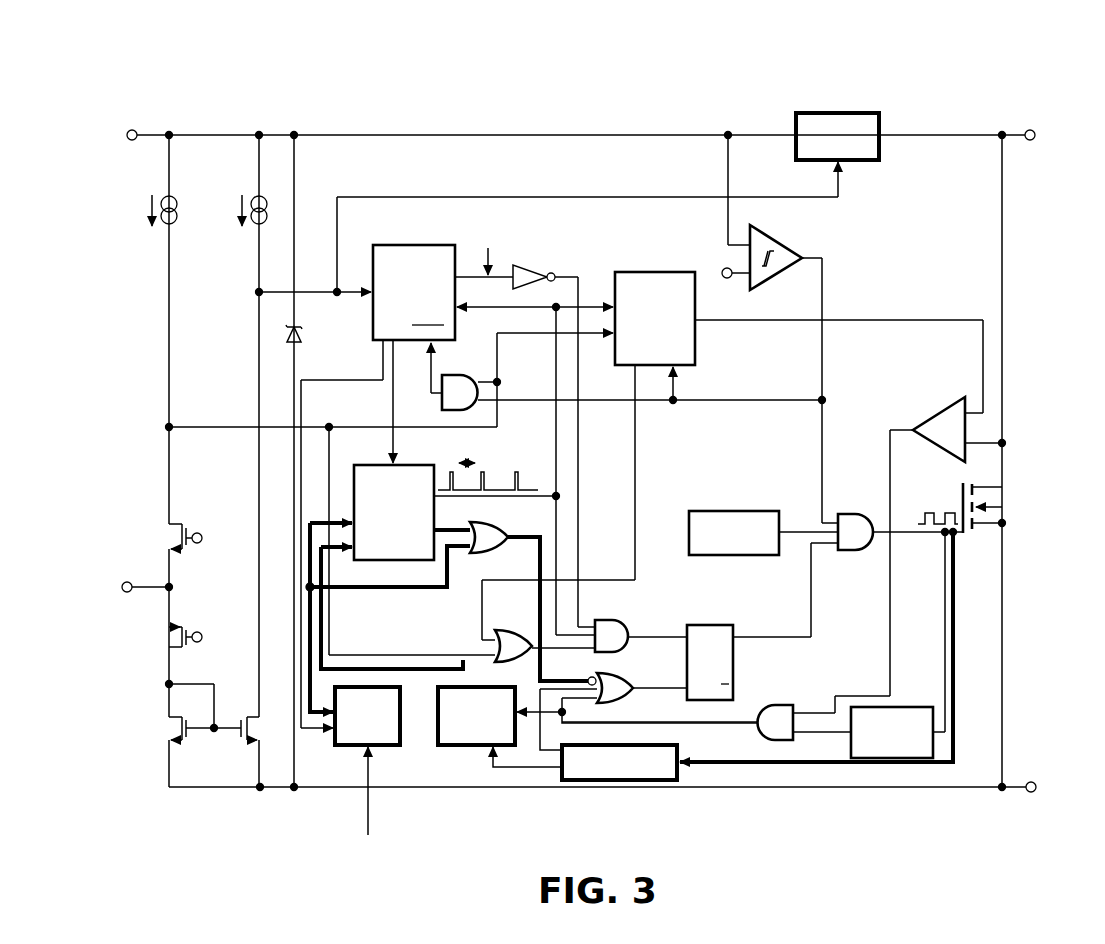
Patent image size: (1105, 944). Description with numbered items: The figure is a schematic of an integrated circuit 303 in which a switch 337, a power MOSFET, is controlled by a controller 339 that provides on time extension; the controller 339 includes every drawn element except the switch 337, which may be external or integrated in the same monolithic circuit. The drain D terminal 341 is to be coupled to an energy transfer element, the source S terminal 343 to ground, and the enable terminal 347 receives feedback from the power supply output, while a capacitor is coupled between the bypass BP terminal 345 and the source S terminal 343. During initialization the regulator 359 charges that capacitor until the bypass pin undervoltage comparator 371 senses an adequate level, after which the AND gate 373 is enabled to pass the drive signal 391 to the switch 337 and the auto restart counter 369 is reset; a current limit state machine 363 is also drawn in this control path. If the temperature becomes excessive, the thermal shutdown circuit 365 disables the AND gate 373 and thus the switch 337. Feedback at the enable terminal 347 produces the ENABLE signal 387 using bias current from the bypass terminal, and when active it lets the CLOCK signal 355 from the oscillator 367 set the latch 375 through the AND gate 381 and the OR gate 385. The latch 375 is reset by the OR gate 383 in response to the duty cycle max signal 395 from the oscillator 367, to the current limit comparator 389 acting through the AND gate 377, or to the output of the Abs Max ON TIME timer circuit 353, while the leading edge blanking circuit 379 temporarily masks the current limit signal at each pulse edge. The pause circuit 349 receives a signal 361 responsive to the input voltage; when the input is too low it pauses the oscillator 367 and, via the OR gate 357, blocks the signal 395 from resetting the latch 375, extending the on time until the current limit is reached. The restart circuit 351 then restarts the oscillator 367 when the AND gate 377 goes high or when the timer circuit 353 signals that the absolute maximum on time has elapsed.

The integrated circuit 303 is at (1002, 53).
The controller 339 is at (440, 98).
The bypass BP terminal 345 is at (108, 115).
The drain D terminal 341 is at (1044, 136).
The source S terminal 343 is at (1052, 778).
The enable terminal 347 is at (106, 608).
The ENABLE signal 387 is at (196, 404).
The auto restart counter 369 is at (388, 245).
The current limit state machine 363 is at (652, 274).
The regulator 359 is at (842, 114).
The bypass pin undervoltage comparator 371 is at (775, 274).
The current limit comparator 389 is at (935, 441).
The switch 337 is at (1004, 498).
The drive signal 391 is at (952, 510).
The AND gate 373 is at (836, 513).
The thermal shutdown circuit 365 is at (756, 507).
The oscillator 367 is at (380, 467).
The CLOCK signal 355 is at (537, 486).
The duty cycle max DC MAX signal 395 is at (436, 524).
The OR gate 357 is at (512, 528).
The pause circuit 349 is at (408, 689).
The OR gate 385 is at (493, 629).
The AND gate 381 is at (611, 620).
The OR gate 383 is at (616, 674).
The latch 375 is at (710, 625).
The AND gate 377 is at (774, 734).
The leading edge blanking circuit 379 is at (886, 708).
The Abs Max ON TIME timer circuit 353 is at (613, 783).
The restart circuit 351 is at (464, 750).
The signal responsive to the power supply input voltage 361 is at (375, 835).